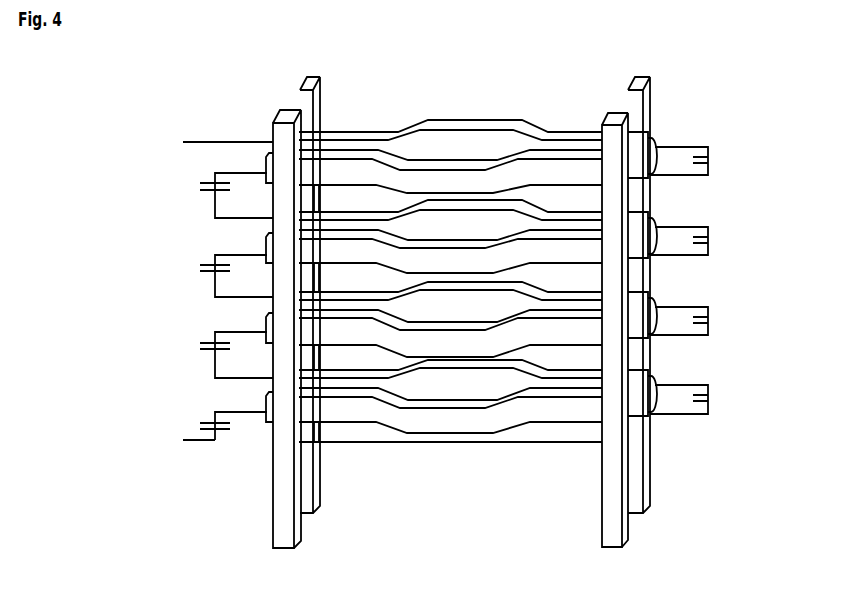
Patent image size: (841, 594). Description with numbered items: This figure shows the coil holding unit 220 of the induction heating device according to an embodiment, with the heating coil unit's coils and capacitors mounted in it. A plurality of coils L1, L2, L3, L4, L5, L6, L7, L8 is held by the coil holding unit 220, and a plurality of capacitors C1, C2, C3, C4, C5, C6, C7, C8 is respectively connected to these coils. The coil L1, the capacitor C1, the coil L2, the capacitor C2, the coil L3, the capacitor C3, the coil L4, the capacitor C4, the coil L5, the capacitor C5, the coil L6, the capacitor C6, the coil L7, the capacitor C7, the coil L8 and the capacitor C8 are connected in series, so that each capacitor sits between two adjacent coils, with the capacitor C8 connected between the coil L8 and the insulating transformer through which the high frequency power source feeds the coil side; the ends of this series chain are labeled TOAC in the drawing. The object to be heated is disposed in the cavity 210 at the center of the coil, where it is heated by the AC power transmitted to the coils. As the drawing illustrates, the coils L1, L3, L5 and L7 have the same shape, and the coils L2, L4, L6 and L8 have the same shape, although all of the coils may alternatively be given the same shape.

The cavity 210 is at (450, 263).
The coil holding unit 220 is at (320, 487).
The coil L1 is at (652, 132).
The coil L2 is at (327, 152).
The coil L3 is at (652, 212).
The coil L4 is at (328, 235).
The coil L5 is at (652, 292).
The coil L6 is at (329, 313).
The coil L7 is at (652, 370).
The coil L8 is at (328, 392).
The capacitor C1 is at (708, 157).
The capacitor C2 is at (207, 183).
The capacitor C3 is at (708, 237).
The capacitor C4 is at (207, 265).
The capacitor C5 is at (708, 317).
The capacitor C6 is at (207, 343).
The capacitor C7 is at (708, 395).
The capacitor C8 is at (207, 423).
The TOAC terminal TOAC is at (151, 291).